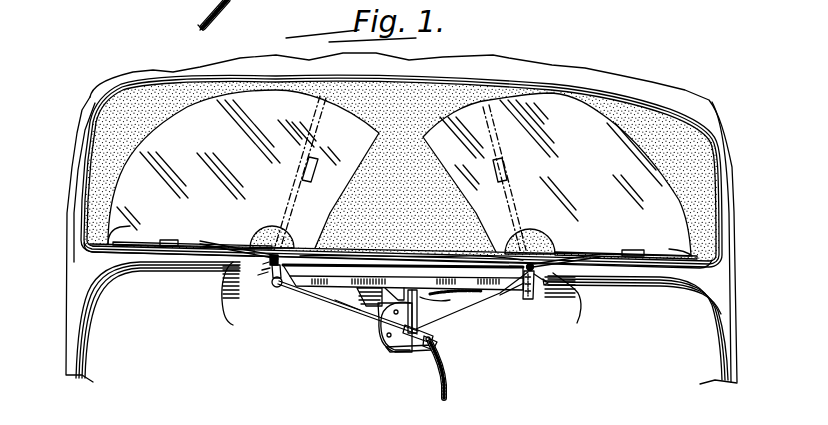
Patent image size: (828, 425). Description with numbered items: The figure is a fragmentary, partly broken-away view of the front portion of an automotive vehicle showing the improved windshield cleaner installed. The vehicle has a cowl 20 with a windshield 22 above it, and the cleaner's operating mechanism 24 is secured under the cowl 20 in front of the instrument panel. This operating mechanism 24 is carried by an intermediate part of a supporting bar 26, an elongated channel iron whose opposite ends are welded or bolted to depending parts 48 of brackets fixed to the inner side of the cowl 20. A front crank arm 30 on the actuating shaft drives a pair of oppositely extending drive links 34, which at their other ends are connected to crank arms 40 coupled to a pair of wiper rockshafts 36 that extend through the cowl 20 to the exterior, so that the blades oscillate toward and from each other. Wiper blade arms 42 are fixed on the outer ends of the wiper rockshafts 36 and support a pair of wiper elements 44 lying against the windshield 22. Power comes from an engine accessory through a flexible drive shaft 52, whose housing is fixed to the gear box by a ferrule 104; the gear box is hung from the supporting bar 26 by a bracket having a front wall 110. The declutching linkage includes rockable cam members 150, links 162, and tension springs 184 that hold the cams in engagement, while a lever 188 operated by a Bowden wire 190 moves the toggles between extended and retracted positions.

The cowl 20 is at (662, 300).
The windshield 22 is at (699, 173).
The operating mechanism 24 is at (369, 347).
The supporting bar 26 is at (338, 280).
The front crank arm 30 is at (371, 380).
The drive links 34 is at (324, 305).
The wiper rockshafts 36 is at (266, 243).
The crank arms 40 is at (274, 287).
The wiper blade arms 42 is at (220, 243).
The wiper elements 44 is at (82, 224).
The depending part 48 is at (537, 294).
The flexible drive shaft 52 is at (447, 390).
The ferrule 104 is at (440, 356).
The front wall 110 is at (343, 307).
The rockable cam members 150 is at (331, 326).
The links 162 is at (417, 331).
The tension springs 184 is at (390, 345).
The lever 188 is at (418, 298).
The Bowden wire 190 is at (424, 302).